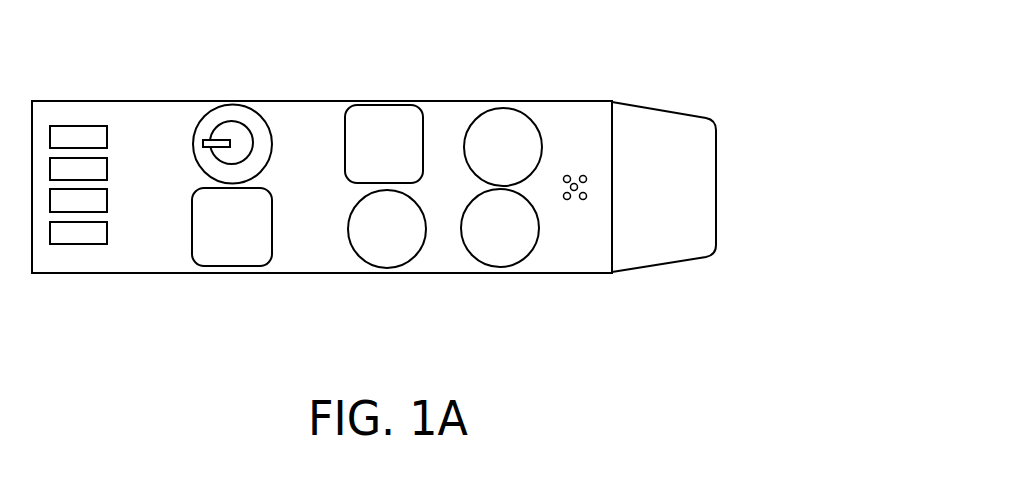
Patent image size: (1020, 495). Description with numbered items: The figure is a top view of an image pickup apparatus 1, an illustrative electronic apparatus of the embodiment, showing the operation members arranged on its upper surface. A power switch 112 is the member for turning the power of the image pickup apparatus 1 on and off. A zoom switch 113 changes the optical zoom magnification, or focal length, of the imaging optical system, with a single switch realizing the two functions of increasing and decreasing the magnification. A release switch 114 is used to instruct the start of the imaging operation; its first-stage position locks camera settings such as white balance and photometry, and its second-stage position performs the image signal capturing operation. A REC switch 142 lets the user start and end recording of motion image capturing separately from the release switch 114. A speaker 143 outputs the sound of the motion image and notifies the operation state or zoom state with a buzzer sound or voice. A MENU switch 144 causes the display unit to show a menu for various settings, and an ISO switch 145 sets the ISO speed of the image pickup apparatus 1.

The image pickup apparatus 1 is at (43, 48).
The power switch 112 is at (274, 115).
The zoom switch 113 is at (446, 255).
The release switch 114 is at (601, 116).
The REC switch 142 is at (605, 253).
The speaker 143 is at (712, 142).
The MENU switch 144 is at (427, 114).
The ISO switch 145 is at (179, 254).